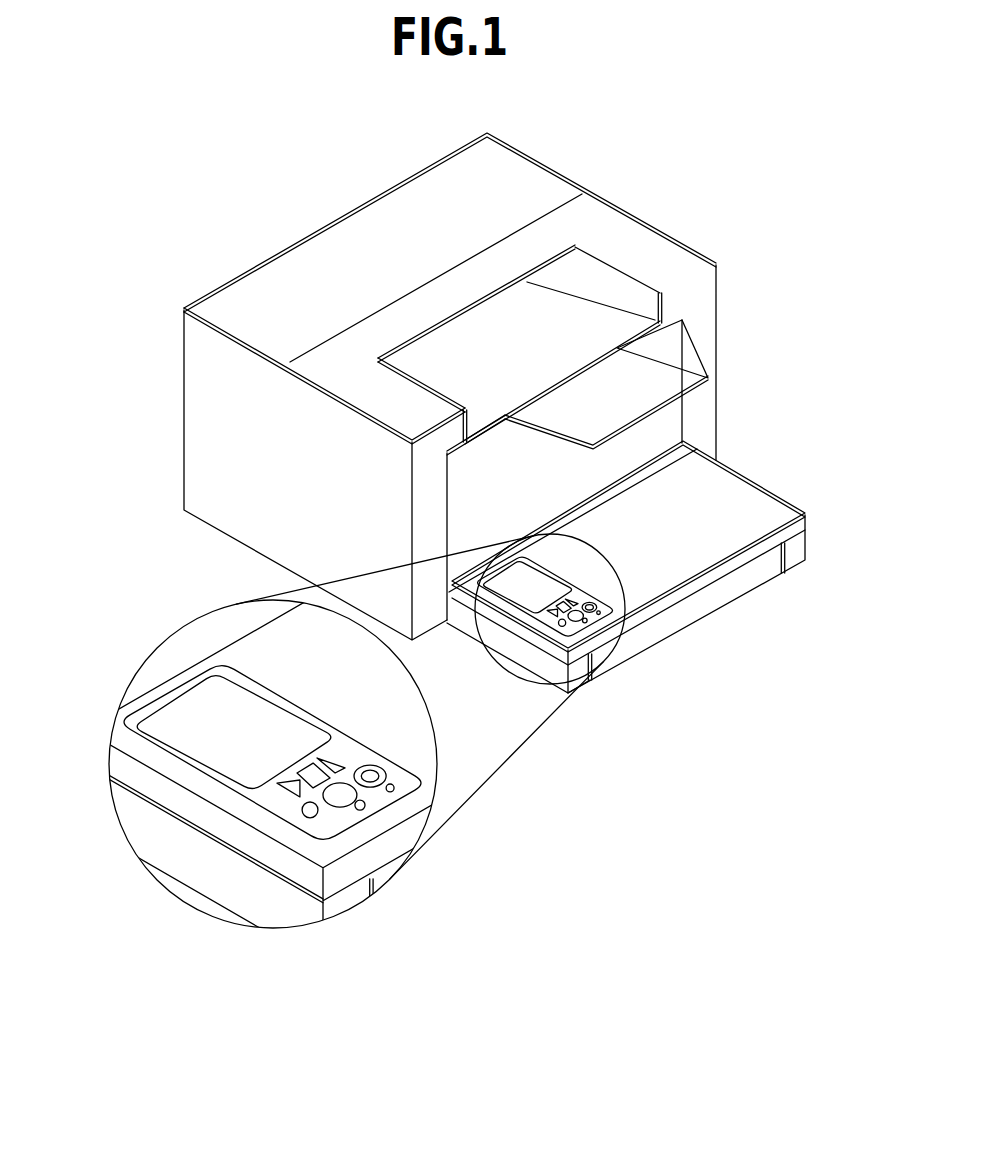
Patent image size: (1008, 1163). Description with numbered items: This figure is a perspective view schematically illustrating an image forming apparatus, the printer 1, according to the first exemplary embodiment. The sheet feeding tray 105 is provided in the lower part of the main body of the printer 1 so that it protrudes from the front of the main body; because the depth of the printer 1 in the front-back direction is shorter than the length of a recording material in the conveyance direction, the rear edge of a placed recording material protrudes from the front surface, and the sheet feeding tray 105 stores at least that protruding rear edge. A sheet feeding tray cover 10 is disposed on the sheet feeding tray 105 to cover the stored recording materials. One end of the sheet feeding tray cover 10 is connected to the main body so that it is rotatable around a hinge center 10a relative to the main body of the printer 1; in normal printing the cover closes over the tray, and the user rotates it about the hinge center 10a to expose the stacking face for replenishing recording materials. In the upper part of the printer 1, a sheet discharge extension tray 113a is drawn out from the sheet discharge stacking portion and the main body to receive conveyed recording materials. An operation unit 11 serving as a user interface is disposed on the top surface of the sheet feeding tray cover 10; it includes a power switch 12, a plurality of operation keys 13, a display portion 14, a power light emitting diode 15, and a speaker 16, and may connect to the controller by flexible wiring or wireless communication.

The printer 1 is at (742, 285).
The sheet feeding tray cover 10 is at (662, 570).
The hinge center 10a is at (700, 455).
The sheet feeding tray 105 is at (750, 570).
The operation unit 11 is at (573, 582).
The sheet discharge extension tray 113a is at (657, 380).
The power switch 12 is at (350, 760).
The operation keys 13 is at (330, 793).
The display portion 14 is at (215, 752).
The power light emitting diode (LED) 15 is at (375, 780).
The speaker 16 is at (312, 812).